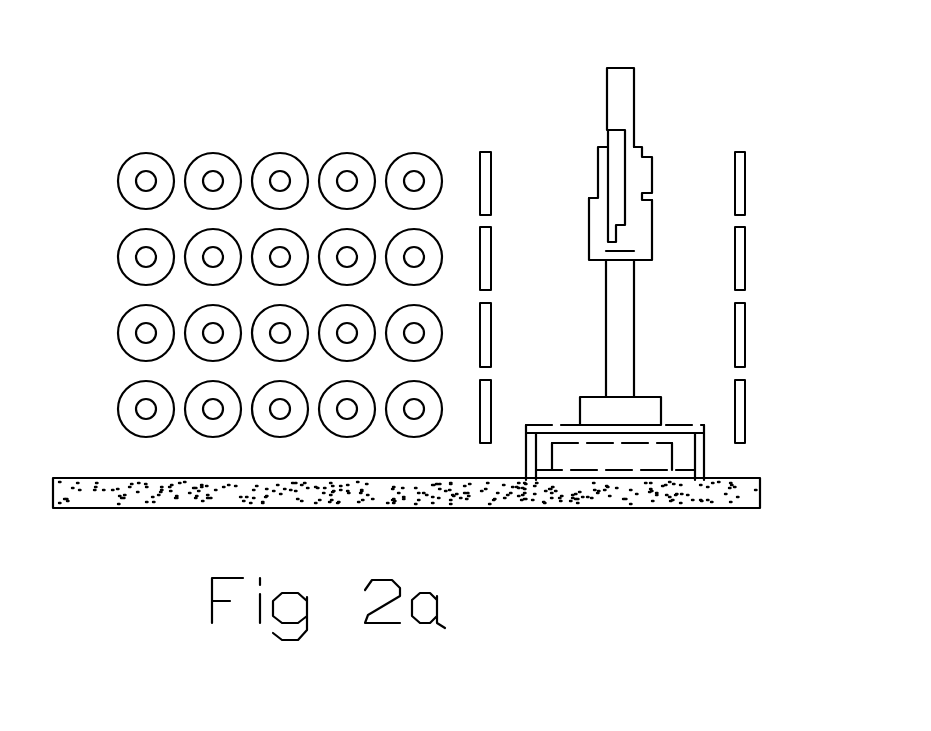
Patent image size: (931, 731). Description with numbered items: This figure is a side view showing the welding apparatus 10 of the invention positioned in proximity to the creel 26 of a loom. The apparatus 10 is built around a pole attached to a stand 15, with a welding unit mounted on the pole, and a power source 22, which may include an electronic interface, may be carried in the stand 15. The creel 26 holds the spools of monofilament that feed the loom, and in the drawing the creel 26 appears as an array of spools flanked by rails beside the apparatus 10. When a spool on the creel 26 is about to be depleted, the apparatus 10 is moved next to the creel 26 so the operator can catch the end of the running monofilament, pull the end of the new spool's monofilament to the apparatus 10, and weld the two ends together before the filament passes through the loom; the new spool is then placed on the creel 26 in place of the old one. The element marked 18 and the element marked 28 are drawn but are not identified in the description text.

The apparatus 10 is at (668, 311).
The stand 15 is at (700, 462).
The robot head / gripper assembly 18 is at (615, 233).
The power source 22 is at (607, 458).
The creel 26 is at (487, 170).
The array of workpieces 28 is at (128, 170).